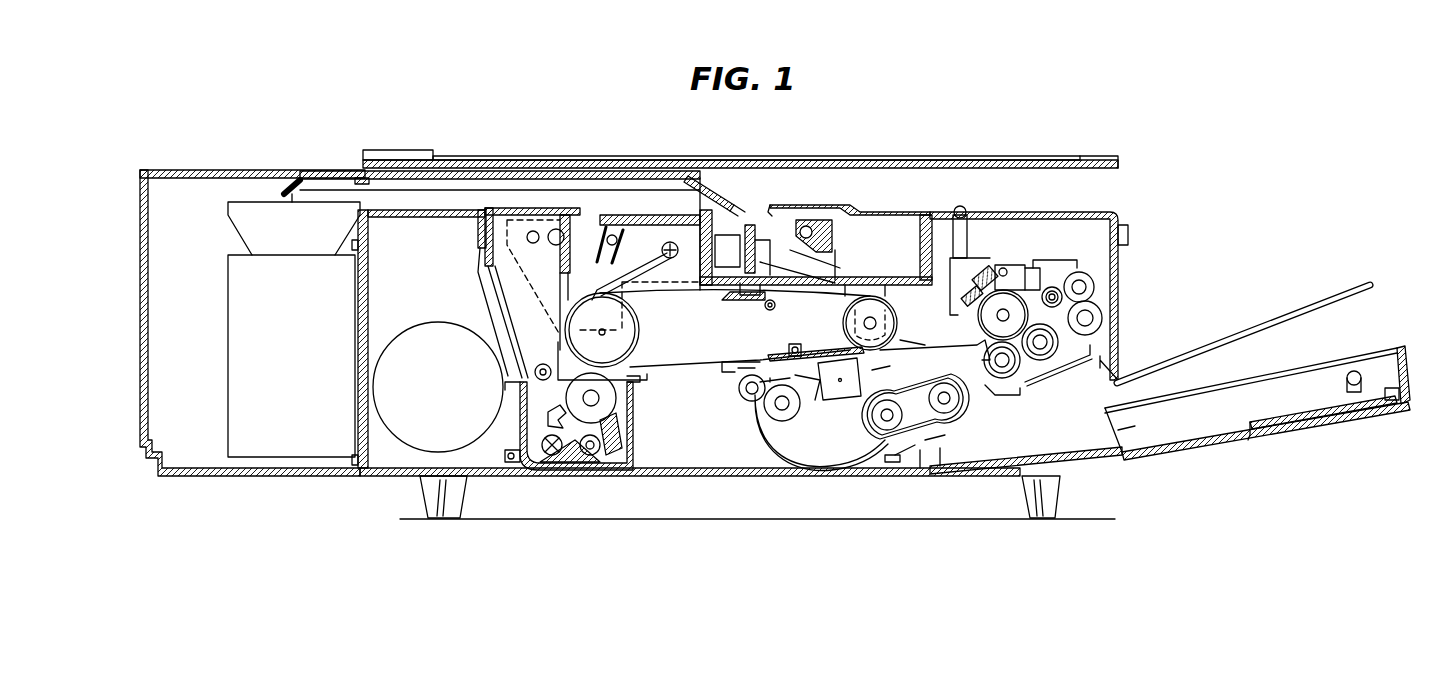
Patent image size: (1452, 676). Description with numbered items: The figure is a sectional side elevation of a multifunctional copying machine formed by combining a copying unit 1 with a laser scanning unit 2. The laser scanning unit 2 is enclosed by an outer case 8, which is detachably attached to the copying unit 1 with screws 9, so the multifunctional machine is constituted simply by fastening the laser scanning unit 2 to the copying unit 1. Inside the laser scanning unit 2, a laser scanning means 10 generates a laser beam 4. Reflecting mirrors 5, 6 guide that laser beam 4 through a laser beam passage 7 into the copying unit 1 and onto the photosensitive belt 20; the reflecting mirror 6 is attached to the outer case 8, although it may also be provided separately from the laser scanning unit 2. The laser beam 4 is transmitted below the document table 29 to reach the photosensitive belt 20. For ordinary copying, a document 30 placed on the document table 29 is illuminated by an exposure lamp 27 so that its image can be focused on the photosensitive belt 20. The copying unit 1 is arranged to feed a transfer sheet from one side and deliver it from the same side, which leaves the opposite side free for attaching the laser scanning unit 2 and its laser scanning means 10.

The copying unit 1 is at (880, 180).
The laser scanning unit 2 is at (185, 187).
The laser beam 4 is at (485, 190).
The reflecting mirror 5 is at (291, 178).
The reflecting mirror 6 is at (695, 178).
The laser beam passage 7 is at (727, 197).
The outer case 8 is at (140, 216).
The screws 9 is at (368, 246).
The laser scanning means 10 is at (265, 445).
The photosensitive belt 20 is at (690, 367).
The exposure lamp 27 is at (805, 226).
The document table 29 is at (963, 160).
The document 30 is at (1043, 160).